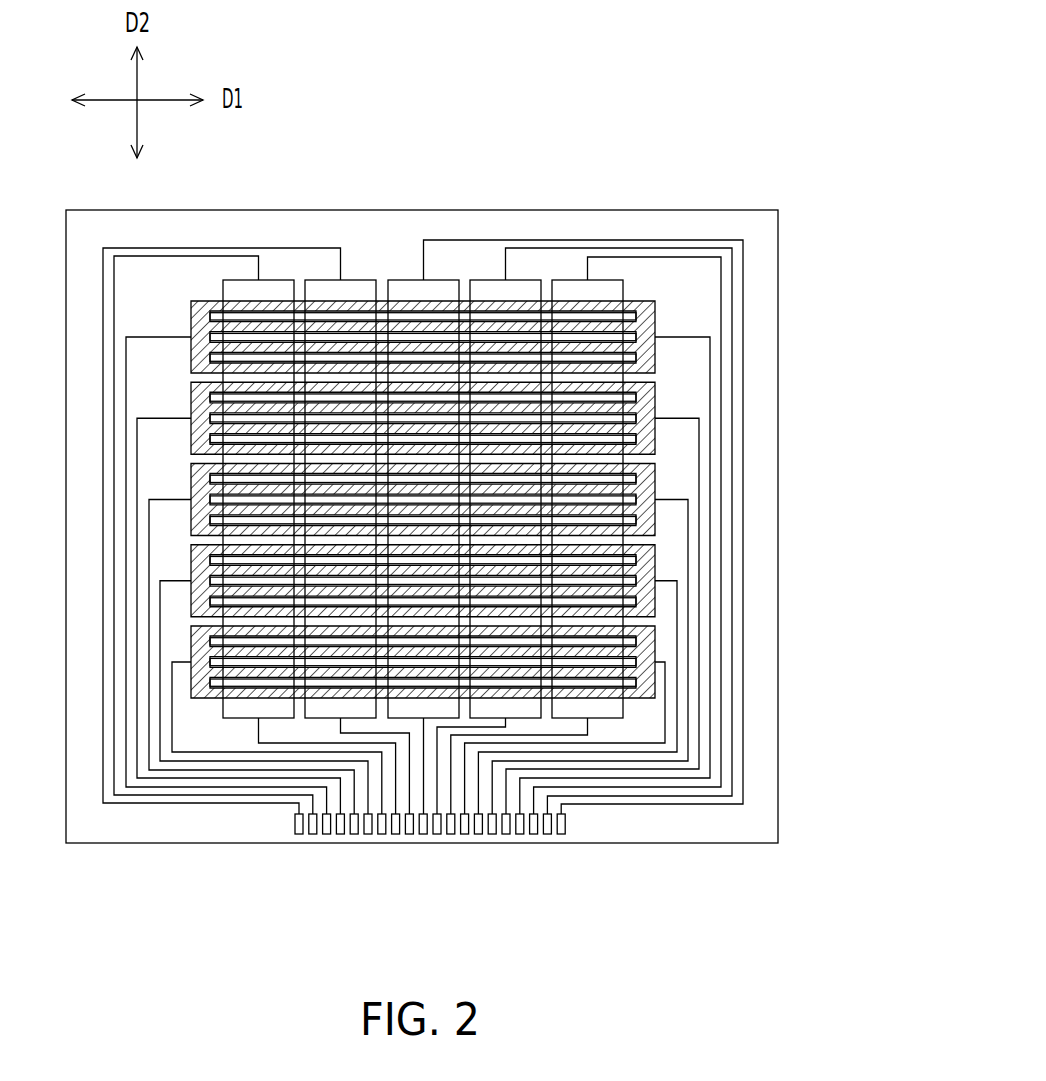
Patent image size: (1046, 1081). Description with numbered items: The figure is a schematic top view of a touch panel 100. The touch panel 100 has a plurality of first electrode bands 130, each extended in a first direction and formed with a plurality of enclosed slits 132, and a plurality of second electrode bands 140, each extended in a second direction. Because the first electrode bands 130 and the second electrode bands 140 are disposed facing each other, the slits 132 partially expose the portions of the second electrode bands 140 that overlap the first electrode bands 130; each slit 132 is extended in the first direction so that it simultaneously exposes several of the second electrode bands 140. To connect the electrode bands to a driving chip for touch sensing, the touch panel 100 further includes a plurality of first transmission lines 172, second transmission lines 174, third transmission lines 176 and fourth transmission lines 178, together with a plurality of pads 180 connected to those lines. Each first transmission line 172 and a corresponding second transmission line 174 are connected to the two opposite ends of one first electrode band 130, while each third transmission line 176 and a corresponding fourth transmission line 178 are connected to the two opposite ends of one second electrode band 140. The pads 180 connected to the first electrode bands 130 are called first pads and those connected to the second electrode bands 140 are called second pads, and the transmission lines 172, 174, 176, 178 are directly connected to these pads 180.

The touch panel 100 is at (800, 974).
The first electrode band 130 is at (655, 318).
The slit 132 is at (598, 318).
The second electrode band 140 is at (617, 292).
The first transmission line 172 is at (182, 663).
The second transmission line 174 is at (665, 583).
The third transmission line 176 is at (592, 727).
The fourth transmission line 178 is at (422, 260).
The pad 180 is at (547, 827).